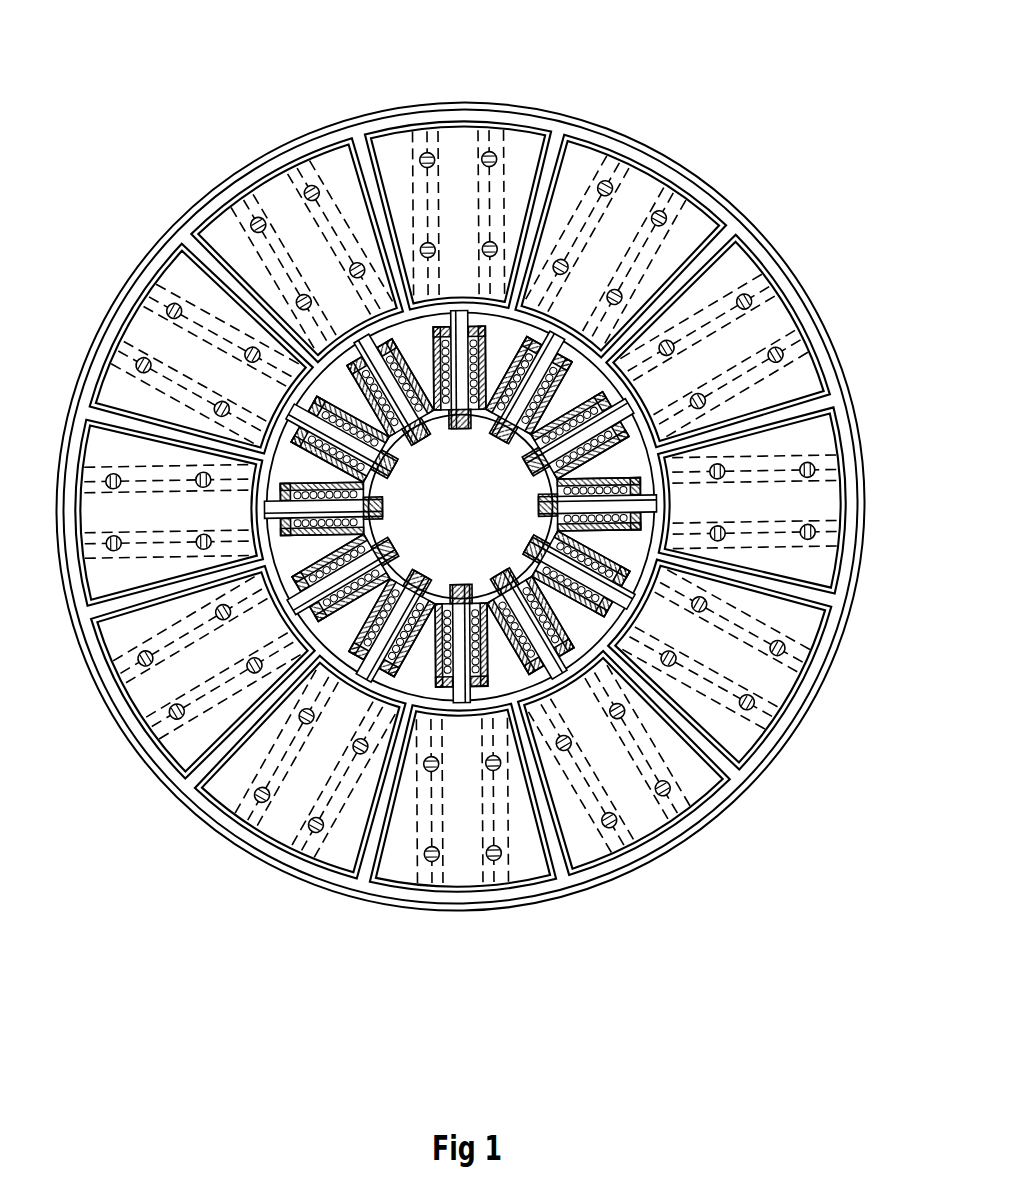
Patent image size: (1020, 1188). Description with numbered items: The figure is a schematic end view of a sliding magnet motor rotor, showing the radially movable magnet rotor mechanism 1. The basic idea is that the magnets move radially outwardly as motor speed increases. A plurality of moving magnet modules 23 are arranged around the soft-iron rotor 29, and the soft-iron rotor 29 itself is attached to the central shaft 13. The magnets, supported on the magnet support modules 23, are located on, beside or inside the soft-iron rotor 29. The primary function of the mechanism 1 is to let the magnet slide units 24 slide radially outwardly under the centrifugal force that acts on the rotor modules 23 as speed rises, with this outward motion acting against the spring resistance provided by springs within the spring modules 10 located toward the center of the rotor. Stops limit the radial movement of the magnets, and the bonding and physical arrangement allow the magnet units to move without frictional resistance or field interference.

The radially movable magnet rotor mechanism 1 is at (495, 466).
The spring module 10 is at (706, 617).
The shaft 13 is at (477, 545).
The magnet support module 23 is at (682, 227).
The magnet slide unit 24 is at (767, 532).
The soft-iron rotor 29 is at (494, 506).